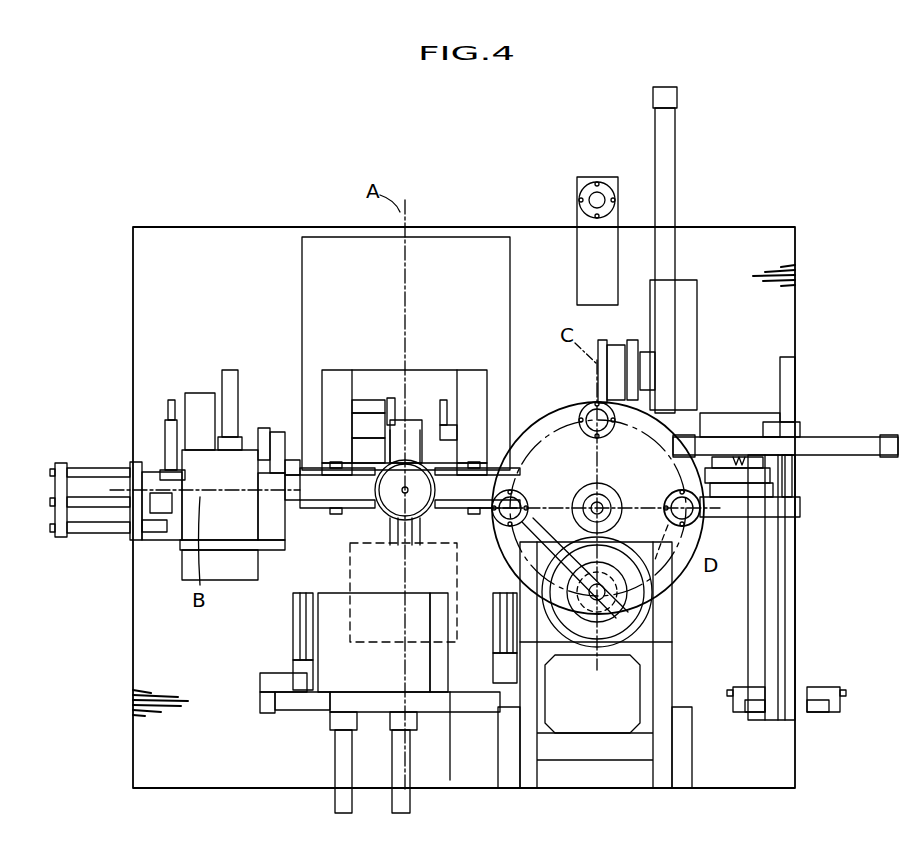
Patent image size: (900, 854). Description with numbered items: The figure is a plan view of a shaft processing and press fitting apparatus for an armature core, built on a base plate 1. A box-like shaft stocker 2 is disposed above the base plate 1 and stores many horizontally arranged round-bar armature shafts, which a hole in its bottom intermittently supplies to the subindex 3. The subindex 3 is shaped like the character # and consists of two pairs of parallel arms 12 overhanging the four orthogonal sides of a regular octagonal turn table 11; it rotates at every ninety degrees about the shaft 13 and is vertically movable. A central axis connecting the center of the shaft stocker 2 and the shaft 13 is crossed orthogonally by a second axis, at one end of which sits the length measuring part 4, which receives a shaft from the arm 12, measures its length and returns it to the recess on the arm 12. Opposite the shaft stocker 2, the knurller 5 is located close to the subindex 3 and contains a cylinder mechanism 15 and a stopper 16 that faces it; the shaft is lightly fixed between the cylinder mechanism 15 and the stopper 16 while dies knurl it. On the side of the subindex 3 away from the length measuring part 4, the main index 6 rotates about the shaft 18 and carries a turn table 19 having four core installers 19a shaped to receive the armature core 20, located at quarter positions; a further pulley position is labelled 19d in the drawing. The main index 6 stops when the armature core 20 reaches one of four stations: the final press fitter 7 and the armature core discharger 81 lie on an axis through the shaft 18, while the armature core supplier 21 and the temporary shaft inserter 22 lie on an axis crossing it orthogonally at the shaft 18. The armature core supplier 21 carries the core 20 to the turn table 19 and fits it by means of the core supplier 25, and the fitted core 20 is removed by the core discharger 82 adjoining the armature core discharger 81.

The base plate 1 is at (133, 690).
The shaft stocker 2 is at (355, 678).
The subindex 3 is at (375, 518).
The length measuring part 4 is at (203, 462).
The knurller 5 is at (420, 385).
The main index 6 is at (552, 403).
The final press fitter 7 is at (608, 620).
The turn table 11 is at (357, 458).
The arms 12 is at (335, 470).
The shaft 13 is at (467, 460).
The cylinder mechanism 15 is at (370, 405).
The stopper 16 is at (446, 400).
The shaft 18 is at (603, 495).
The turn table 19 is at (662, 563).
The core installers 19a is at (598, 440).
The left pulley 19d is at (522, 495).
The armature core 20 is at (595, 182).
The armature core supplier 21 is at (660, 410).
The temporary shaft inserter 22 is at (528, 455).
The core supplier 25 is at (600, 302).
The armature core discharger 81 is at (694, 512).
The core discharger 82 is at (760, 486).